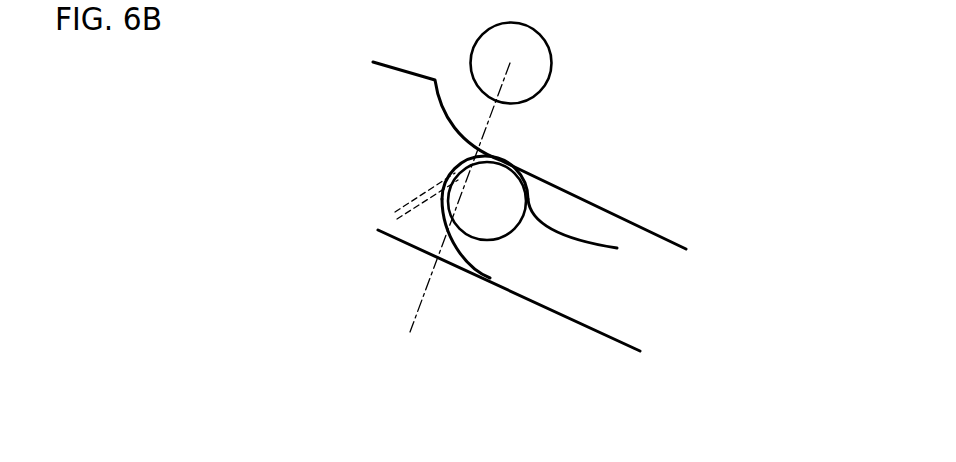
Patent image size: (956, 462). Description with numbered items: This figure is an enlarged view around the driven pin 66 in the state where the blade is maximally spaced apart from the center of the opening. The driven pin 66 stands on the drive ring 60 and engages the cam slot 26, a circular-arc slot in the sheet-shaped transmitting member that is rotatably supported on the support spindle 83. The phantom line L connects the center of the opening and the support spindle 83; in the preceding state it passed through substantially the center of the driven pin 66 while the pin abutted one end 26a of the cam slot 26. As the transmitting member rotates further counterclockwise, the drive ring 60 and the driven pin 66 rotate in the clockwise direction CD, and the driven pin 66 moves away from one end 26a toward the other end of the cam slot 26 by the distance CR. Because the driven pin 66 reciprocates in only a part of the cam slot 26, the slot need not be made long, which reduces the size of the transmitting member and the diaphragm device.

The support spindle 83 is at (527, 72).
The phantom line L is at (488, 122).
The driven pin 66 is at (485, 217).
The one end of the cam slot 26a is at (488, 165).
The cam slot 26 is at (543, 218).
The drive ring 60 is at (668, 232).
The clockwise direction CD is at (452, 315).
The distance CR is at (423, 228).